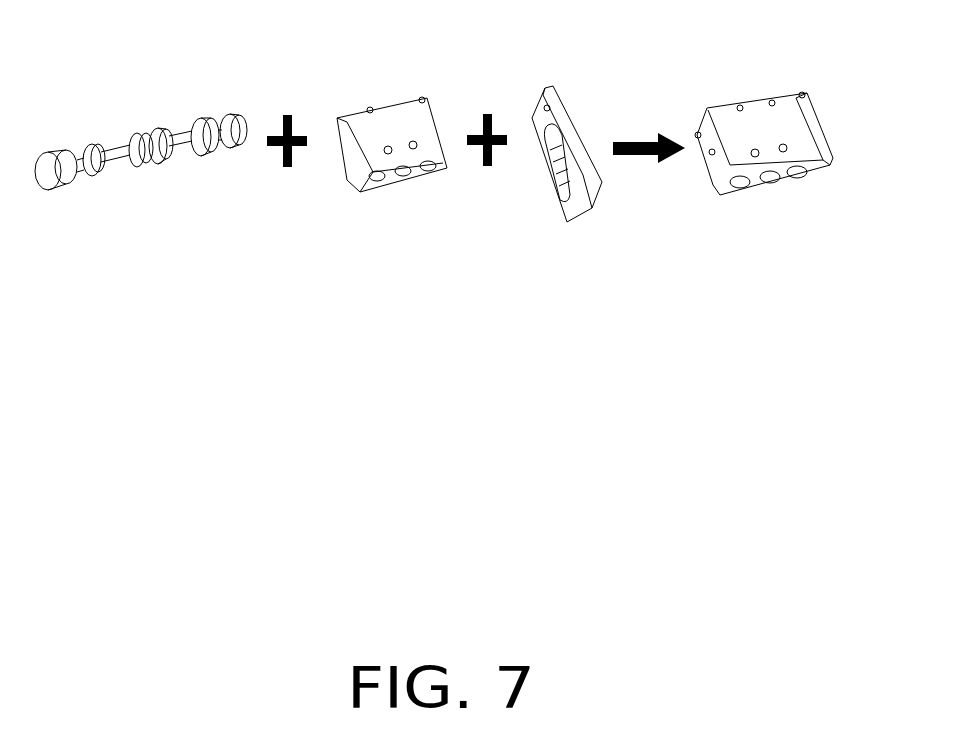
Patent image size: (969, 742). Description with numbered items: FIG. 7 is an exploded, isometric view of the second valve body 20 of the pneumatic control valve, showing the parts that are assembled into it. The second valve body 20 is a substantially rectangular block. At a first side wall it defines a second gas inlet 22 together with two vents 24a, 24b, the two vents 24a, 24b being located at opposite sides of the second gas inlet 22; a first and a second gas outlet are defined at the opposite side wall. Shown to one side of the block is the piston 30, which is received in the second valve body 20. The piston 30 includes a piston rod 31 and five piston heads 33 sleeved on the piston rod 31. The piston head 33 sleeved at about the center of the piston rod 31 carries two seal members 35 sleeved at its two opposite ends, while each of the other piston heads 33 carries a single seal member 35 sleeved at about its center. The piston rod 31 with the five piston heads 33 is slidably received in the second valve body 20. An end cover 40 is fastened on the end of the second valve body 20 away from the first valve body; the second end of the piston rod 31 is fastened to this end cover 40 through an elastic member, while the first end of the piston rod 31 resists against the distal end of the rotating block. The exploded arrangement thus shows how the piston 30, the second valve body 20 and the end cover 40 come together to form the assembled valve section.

The piston 30 is at (141, 133).
The seal member 35 is at (97, 154).
The piston rod 31 is at (120, 152).
The piston head 33 is at (152, 143).
The second valve body 20 is at (405, 132).
The vent 24a is at (377, 176).
The second gas inlet 22 is at (405, 168).
The vent 24b is at (427, 167).
The end cover 40 is at (575, 172).